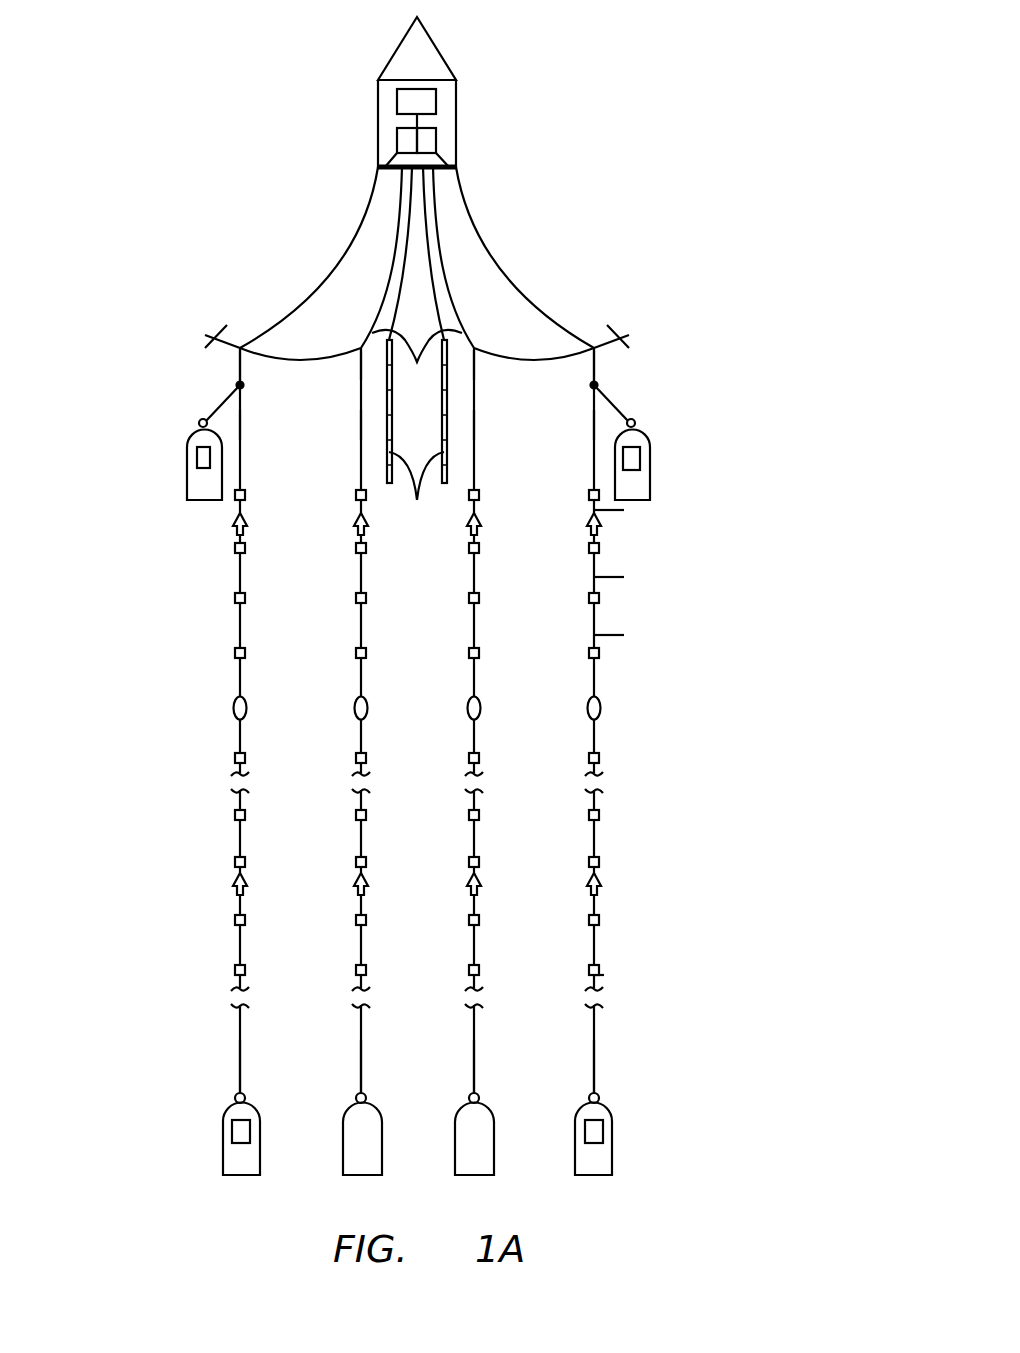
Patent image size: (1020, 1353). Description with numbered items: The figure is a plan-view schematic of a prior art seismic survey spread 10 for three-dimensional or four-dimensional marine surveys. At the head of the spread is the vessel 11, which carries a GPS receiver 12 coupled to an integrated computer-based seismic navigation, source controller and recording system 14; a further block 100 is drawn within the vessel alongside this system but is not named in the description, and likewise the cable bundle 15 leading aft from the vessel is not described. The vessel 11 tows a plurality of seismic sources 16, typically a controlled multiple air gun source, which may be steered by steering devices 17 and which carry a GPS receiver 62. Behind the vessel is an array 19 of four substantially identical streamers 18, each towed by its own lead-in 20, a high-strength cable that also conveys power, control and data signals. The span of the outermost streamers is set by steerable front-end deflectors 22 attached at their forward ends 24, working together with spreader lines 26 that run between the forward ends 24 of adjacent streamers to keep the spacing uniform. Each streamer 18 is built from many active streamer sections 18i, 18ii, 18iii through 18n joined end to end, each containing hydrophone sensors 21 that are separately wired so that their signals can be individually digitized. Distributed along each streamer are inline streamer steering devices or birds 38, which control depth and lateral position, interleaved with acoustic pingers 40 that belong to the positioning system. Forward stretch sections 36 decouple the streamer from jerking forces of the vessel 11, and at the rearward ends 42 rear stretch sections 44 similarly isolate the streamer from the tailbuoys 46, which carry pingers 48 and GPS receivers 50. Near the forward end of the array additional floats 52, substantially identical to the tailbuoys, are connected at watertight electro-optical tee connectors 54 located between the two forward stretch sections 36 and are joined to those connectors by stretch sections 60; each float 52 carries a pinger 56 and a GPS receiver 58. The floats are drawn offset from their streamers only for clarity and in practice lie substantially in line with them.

The seismic survey spread 10 is at (722, 119).
The vessel 11 is at (457, 120).
The GPS receiver 12 is at (437, 100).
The integrated computer-based seismic navigation, source controller, and recording s 14 is at (397, 137).
The lead-in cables 15 is at (413, 228).
The seismic sources 16 is at (416, 496).
The steering devices 17 is at (417, 411).
The streamers 18 is at (241, 622).
The active streamer section 18i is at (594, 510).
The active streamer section 18ii is at (594, 577).
The active streamer section 18iii is at (594, 635).
The active streamer section 18n is at (597, 973).
The streamer array 19 is at (120, 607).
The lead-ins 20 is at (380, 208).
The hydrophone sensors 21 is at (366, 655).
The steerable front-end deflectors 22 is at (208, 338).
The forward ends 24 is at (242, 365).
The spreader lines 26 is at (289, 360).
The forward stretch sections 36 is at (242, 425).
The inline streamer steering devices 38 is at (236, 527).
The pingers 40 is at (234, 704).
The rearward ends 42 is at (238, 1030).
The rear stretch sections 44 is at (242, 1065).
The tailbuoys 46 is at (226, 1160).
The pingers 48 is at (235, 1096).
The GPS receivers 50 is at (232, 1131).
The floats 52 is at (189, 490).
The tee connectors 54 is at (238, 384).
The pingers 56 is at (198, 423).
The GPS receivers 58 is at (197, 458).
The stretch sections 60 is at (221, 404).
The GPS receiver 62 is at (368, 334).
The control system 100 is at (437, 137).